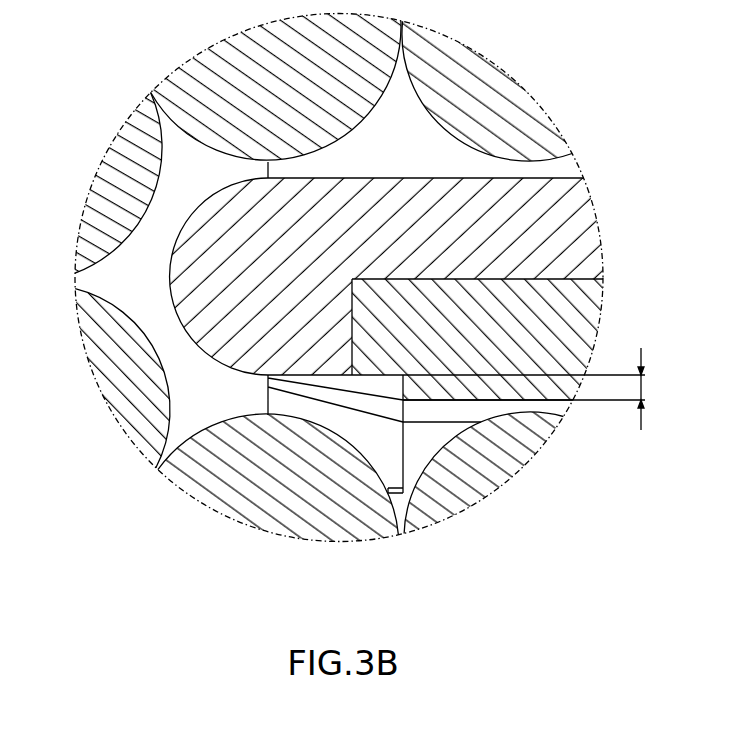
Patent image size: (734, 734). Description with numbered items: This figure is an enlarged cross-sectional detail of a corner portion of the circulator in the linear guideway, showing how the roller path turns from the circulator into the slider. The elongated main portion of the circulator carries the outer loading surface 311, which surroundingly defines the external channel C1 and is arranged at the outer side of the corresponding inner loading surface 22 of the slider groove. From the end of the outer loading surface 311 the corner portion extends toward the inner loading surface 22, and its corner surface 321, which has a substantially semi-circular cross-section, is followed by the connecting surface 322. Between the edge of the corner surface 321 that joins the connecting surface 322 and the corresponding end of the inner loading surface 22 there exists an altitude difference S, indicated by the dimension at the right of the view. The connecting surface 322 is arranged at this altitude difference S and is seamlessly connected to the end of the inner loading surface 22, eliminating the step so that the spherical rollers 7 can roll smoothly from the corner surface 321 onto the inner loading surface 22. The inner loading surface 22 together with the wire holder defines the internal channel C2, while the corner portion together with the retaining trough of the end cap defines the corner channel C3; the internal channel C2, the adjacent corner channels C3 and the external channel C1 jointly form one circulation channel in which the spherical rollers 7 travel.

The outer loading surface 311 is at (488, 178).
The corner surface 321 is at (170, 233).
The connecting surface 322 is at (356, 393).
The inner loading surface 22 is at (536, 432).
The spherical roller 7 is at (497, 458).
The external channel C1 is at (402, 142).
The internal channel C2 is at (425, 432).
The corner channel C3 is at (138, 283).
The altitude difference S is at (626, 389).